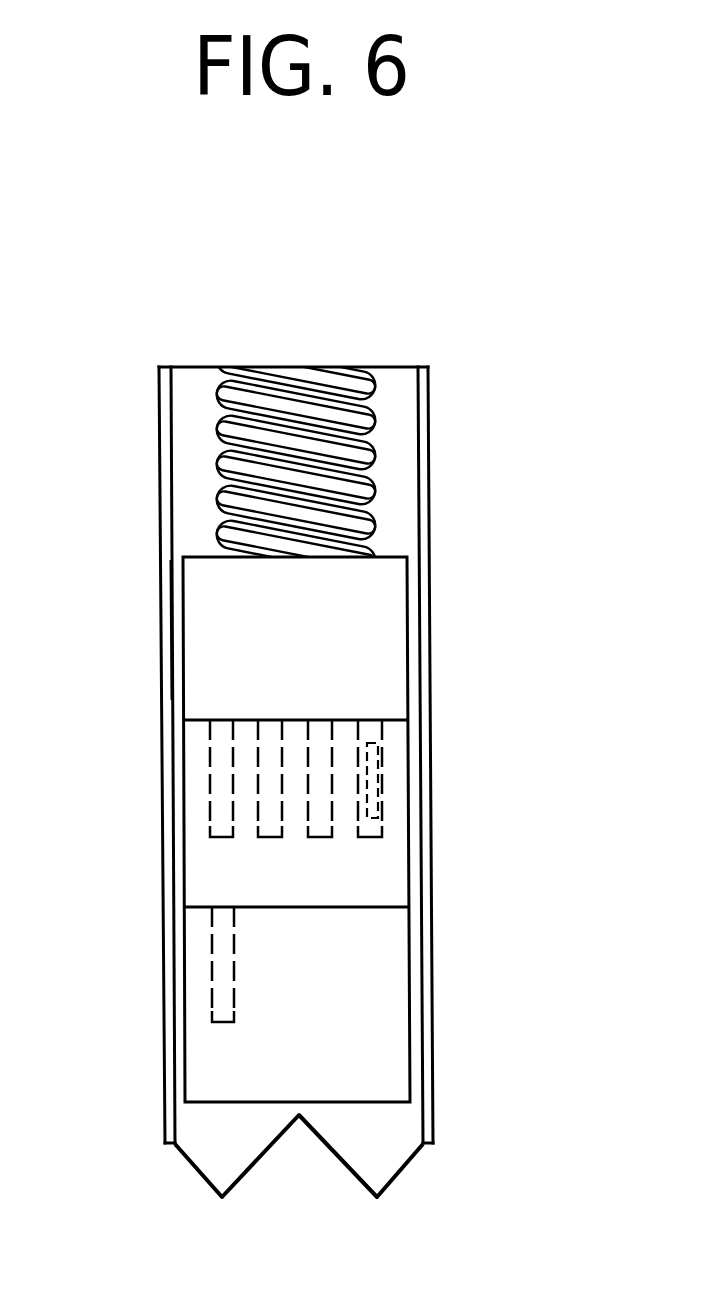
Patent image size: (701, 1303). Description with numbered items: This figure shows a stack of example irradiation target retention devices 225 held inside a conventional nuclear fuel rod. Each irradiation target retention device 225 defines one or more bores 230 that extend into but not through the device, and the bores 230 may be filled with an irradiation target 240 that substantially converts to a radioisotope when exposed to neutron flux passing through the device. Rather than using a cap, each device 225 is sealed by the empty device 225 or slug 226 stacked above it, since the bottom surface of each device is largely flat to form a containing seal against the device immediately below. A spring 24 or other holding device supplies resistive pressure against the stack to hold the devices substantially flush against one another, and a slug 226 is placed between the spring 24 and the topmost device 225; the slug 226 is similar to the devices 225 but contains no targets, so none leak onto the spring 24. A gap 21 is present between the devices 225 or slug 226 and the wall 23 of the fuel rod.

The spring 24 is at (395, 443).
The gap 21 is at (175, 583).
The wall 23 is at (173, 640).
The slug 226 is at (407, 635).
The bores 230 is at (220, 786).
The irradiation target 240 is at (377, 765).
The irradiation target retention device 225 is at (385, 942).